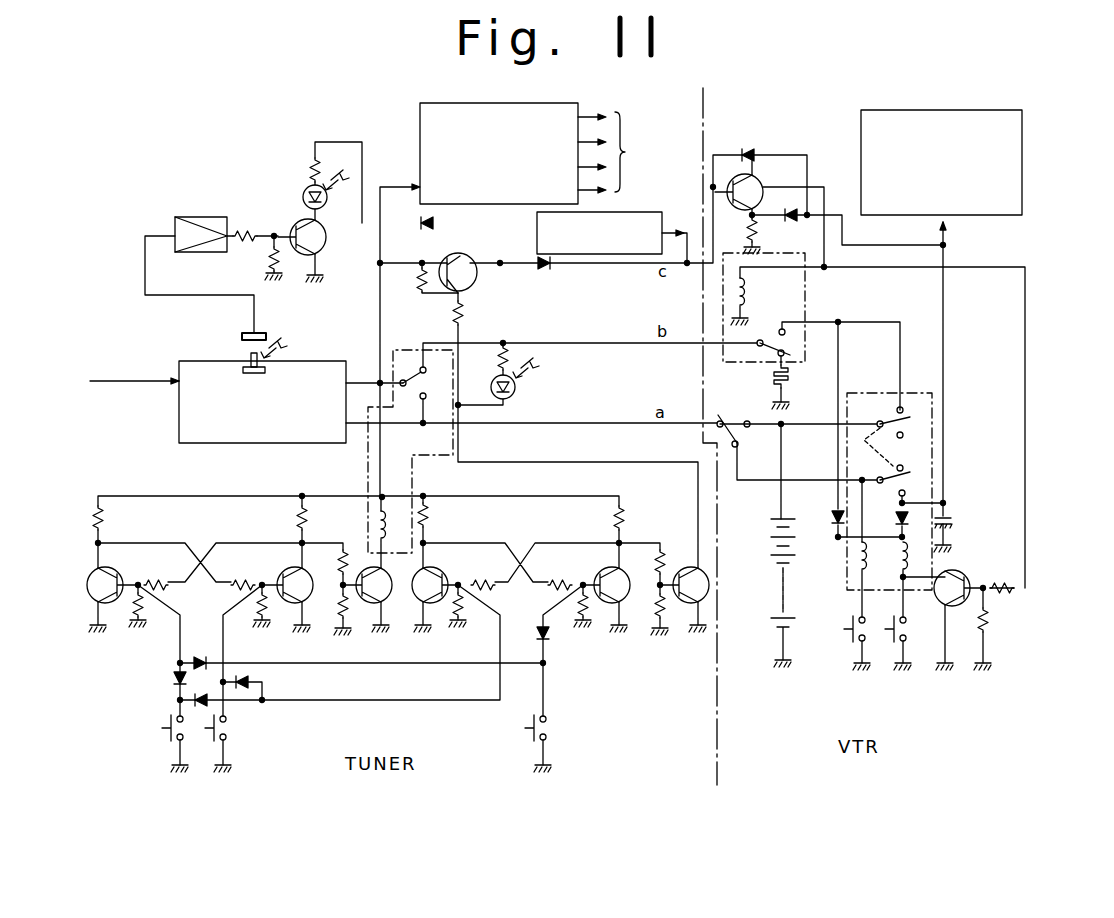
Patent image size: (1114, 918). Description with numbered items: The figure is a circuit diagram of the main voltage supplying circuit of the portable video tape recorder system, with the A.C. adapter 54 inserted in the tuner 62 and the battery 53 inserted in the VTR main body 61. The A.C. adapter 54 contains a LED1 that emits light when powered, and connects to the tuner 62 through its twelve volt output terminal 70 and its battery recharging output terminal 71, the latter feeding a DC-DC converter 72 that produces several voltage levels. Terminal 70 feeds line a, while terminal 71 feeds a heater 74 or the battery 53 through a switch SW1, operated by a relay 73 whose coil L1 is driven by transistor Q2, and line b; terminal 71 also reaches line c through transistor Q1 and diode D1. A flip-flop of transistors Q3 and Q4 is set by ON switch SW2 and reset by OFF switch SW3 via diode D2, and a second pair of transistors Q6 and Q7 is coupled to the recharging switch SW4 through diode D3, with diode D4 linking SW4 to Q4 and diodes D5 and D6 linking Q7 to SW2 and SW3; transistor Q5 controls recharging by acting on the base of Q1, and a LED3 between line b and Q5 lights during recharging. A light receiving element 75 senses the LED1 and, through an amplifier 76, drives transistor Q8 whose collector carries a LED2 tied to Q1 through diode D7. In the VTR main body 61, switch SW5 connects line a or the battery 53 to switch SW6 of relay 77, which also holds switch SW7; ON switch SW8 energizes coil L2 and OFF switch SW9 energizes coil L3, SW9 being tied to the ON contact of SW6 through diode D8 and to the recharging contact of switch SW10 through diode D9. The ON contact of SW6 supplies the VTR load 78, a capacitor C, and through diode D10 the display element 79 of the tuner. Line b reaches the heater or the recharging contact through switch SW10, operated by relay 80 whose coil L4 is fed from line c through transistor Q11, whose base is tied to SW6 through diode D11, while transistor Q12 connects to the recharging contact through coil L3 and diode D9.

The tuner 62 is at (240, 151).
The amplifier 76 is at (200, 217).
The light receiving element 75 is at (262, 332).
The A.C. adapter 54 is at (200, 361).
The battery recharging output terminal 71 is at (347, 371).
The D.C. 12 V output terminal 70 is at (347, 440).
The relay 73 is at (415, 470).
The DC-DC converter 72 is at (540, 103).
The display element 79 is at (645, 212).
The VTR load 78 is at (1022, 152).
The VTR main body 61 is at (1064, 265).
The relay 80 is at (806, 282).
The heater 74 is at (790, 378).
The relay 77 is at (913, 393).
The battery 53 is at (772, 548).
The light emitting diode LED1 is at (282, 361).
The light emitting diode LED2 is at (294, 189).
The light emitting diode LED3 is at (517, 392).
The transistor Q1 is at (476, 283).
The transistor Q2 is at (377, 605).
The transistor Q3 is at (296, 605).
The transistor Q4 is at (87, 584).
The transistor Q5 is at (692, 605).
The transistor Q6 is at (614, 605).
The transistor Q7 is at (433, 605).
The transistor Q8 is at (326, 248).
The transistor Q11 is at (760, 178).
The transistor Q12 is at (958, 605).
The diode D1 is at (550, 271).
The diode D2 is at (172, 675).
The diode D3 is at (552, 643).
The diode D4 is at (198, 655).
The diode D5 is at (250, 682).
The diode D6 is at (192, 700).
The diode D7 is at (429, 229).
The diode D8 is at (912, 517).
The diode D9 is at (835, 510).
The diode D10 is at (752, 150).
The diode D11 is at (791, 222).
The switch SW1 is at (413, 375).
The ON switch SW2 is at (232, 740).
The OFF switch SW3 is at (170, 738).
The recharging switch SW4 is at (549, 742).
The switch SW5 is at (760, 452).
The switch SW6 is at (912, 474).
The switch SW7 is at (912, 422).
The ON switch SW8 is at (853, 642).
The OFF switch SW9 is at (910, 640).
The switch SW10 is at (770, 352).
The coil L1 is at (373, 523).
The coil L2 is at (858, 557).
The coil L3 is at (908, 560).
The coil L4 is at (746, 292).
The capacitor C is at (953, 526).